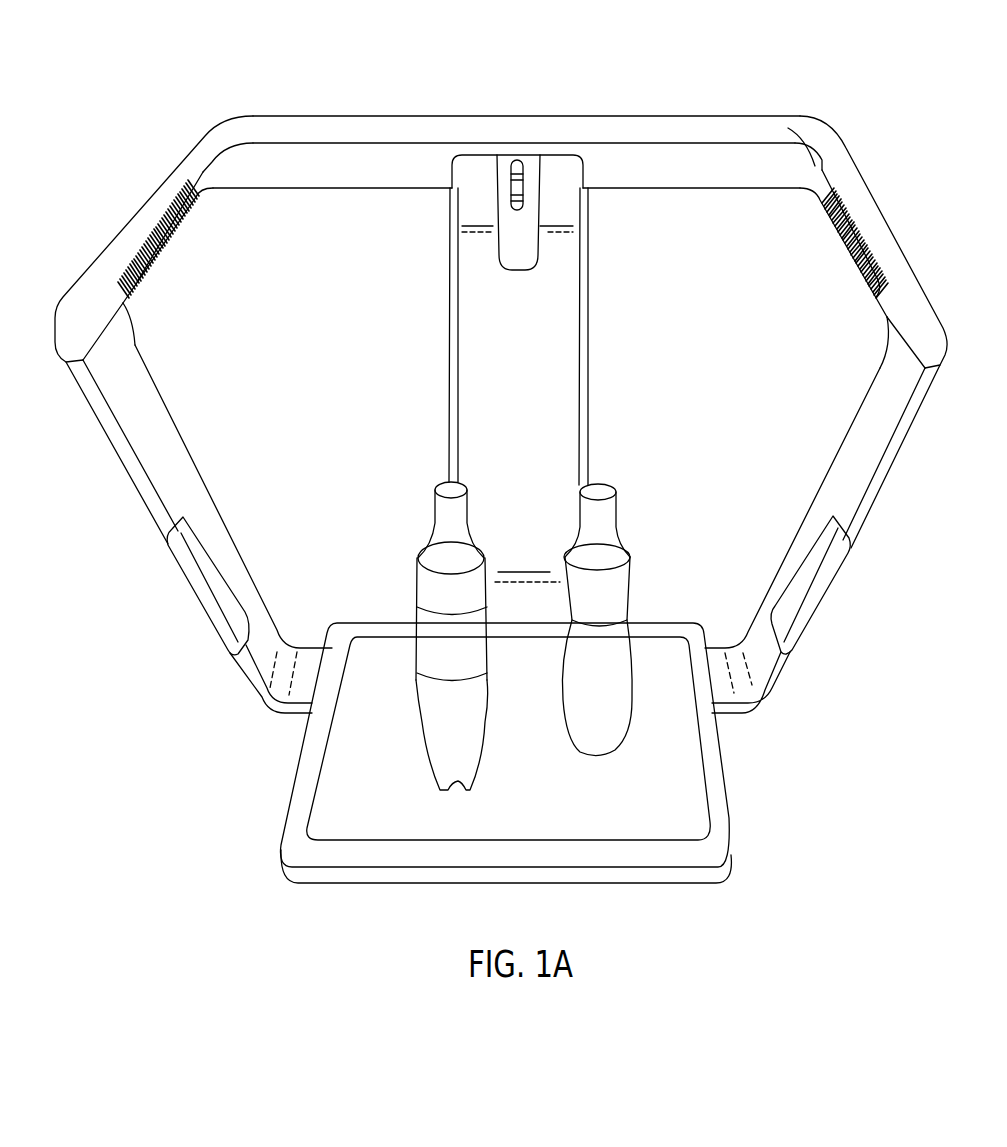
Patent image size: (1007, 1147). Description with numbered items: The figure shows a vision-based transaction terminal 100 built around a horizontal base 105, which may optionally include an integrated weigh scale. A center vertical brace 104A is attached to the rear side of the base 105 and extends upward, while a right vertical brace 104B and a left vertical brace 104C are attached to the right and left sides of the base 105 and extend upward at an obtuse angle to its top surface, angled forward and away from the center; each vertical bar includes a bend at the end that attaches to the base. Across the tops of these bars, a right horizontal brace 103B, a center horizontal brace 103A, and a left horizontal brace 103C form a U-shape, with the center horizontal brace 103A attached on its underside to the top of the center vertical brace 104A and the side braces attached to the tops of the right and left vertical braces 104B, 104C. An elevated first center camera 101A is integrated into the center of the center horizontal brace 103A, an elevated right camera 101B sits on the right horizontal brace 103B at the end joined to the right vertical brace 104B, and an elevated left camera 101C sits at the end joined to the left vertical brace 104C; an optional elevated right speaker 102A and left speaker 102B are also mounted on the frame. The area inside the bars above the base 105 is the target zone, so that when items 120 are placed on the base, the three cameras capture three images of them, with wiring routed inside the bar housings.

The vision-based transaction terminal 100 is at (112, 44).
The elevated first center camera 101A is at (514, 158).
The elevated right camera 101B is at (123, 303).
The elevated left camera 101C is at (887, 317).
The elevated right speaker 102A is at (148, 238).
The elevated left speaker 102B is at (852, 248).
The center horizontal brace 103A is at (372, 118).
The right horizontal brace 103B is at (95, 265).
The left horizontal brace 103C is at (858, 180).
The center vertical brace 104A is at (467, 325).
The right vertical brace 104B is at (147, 485).
The left vertical brace 104C is at (873, 490).
The horizontal base 105 is at (707, 823).
The items 120 is at (443, 540).